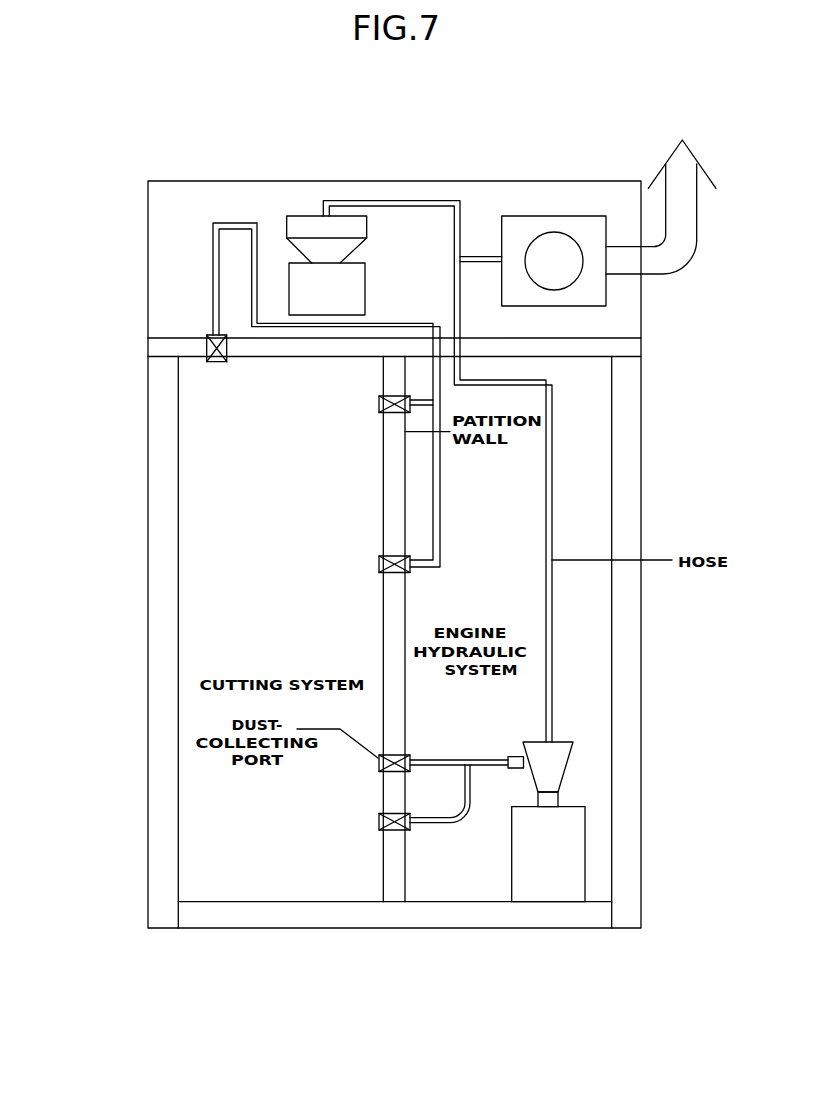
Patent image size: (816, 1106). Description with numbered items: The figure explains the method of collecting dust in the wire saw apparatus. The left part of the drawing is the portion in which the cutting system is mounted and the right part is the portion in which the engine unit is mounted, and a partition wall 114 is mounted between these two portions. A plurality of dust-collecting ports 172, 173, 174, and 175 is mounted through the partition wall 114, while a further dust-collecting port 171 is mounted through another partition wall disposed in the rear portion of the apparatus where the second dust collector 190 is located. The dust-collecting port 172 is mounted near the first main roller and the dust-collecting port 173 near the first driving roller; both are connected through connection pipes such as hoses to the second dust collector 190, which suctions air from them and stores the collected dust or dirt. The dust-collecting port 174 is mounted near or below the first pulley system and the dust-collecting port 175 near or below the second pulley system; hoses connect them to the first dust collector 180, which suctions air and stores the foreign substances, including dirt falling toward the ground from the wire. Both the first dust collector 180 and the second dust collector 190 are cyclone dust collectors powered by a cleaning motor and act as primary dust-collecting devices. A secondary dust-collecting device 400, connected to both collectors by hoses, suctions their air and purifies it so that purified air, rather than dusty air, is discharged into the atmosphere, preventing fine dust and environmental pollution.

The partition wall 114 is at (383, 475).
The dust-collecting port 171 is at (208, 335).
The dust-collecting port 172 is at (378, 403).
The dust-collecting port 173 is at (378, 567).
The dust-collecting port 174 is at (378, 762).
The dust-collecting port 175 is at (378, 823).
The first dust collector 180 is at (568, 768).
The second dust collector 190 is at (318, 216).
The secondary dust-collecting device 400 is at (540, 216).